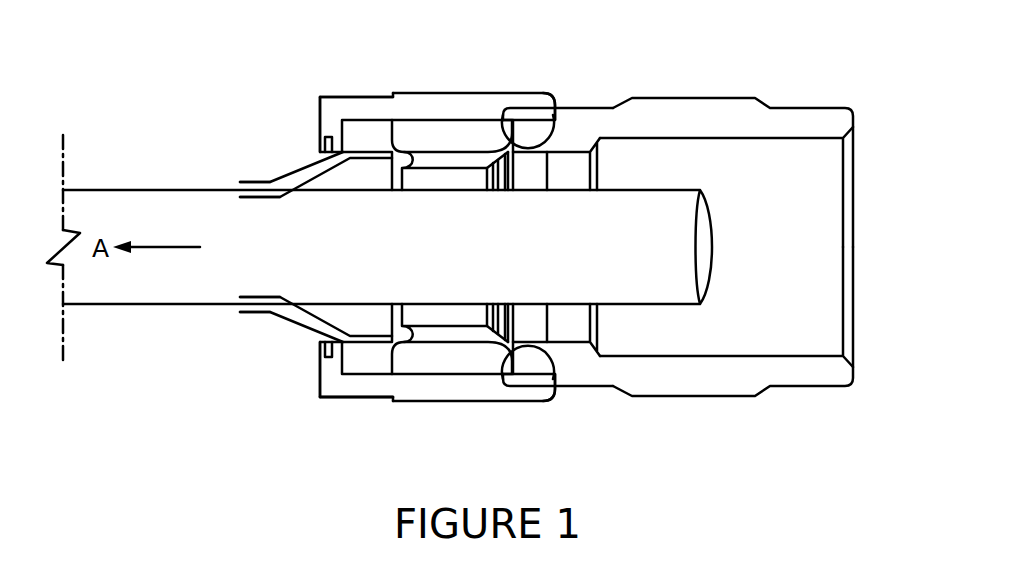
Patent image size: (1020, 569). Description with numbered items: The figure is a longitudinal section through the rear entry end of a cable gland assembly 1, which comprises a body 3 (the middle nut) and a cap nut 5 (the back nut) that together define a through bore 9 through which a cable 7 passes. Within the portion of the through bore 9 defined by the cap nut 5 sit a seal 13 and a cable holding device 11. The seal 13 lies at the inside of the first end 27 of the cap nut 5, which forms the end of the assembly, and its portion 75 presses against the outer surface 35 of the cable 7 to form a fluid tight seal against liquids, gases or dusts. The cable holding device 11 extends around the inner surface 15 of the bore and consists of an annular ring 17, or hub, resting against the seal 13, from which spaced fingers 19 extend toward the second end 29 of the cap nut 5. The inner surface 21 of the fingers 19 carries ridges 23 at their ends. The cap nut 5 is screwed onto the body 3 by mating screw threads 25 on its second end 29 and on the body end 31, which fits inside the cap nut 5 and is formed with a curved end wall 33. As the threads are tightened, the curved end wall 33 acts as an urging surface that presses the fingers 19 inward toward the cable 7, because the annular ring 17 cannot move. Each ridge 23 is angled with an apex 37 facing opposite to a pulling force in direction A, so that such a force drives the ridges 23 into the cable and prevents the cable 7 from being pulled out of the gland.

The cable gland assembly 1 is at (777, 33).
The body 3 is at (707, 108).
The cap nut 5 is at (385, 112).
The cable 7 is at (105, 205).
The through bore 9 is at (818, 240).
The cable holding device 11 is at (425, 137).
The seal 13 is at (345, 112).
The inner surface 15 is at (403, 385).
The annular ring 17 is at (355, 378).
The fingers 19 is at (480, 137).
The inner surface 21 is at (440, 380).
The ridges 23 is at (503, 185).
The mating screw threads 25 is at (524, 110).
The first end 27 is at (318, 110).
The second end 29 is at (553, 392).
The body end 31 is at (575, 125).
The curved end wall 33 is at (553, 108).
The outer surface 35 is at (158, 190).
The apex 37 is at (520, 312).
The portion 75 is at (256, 182).